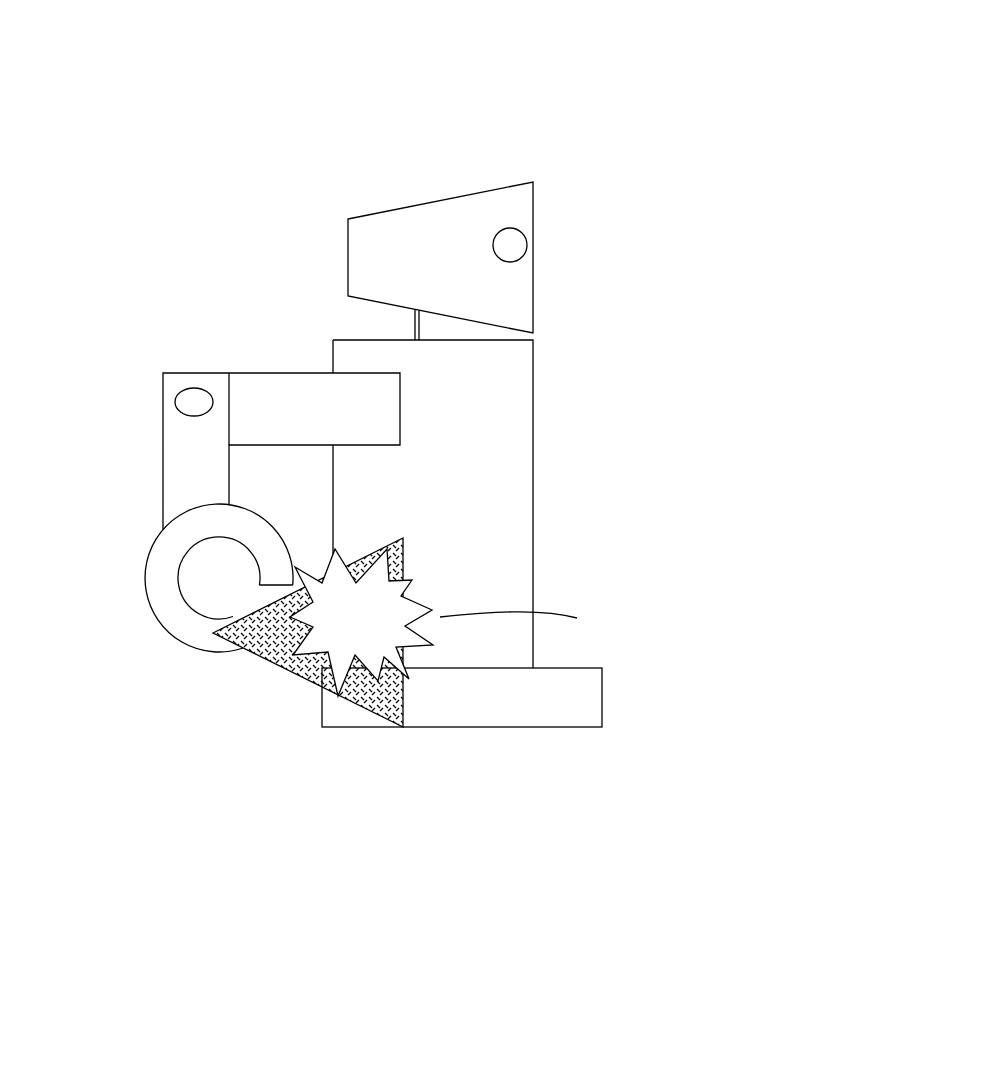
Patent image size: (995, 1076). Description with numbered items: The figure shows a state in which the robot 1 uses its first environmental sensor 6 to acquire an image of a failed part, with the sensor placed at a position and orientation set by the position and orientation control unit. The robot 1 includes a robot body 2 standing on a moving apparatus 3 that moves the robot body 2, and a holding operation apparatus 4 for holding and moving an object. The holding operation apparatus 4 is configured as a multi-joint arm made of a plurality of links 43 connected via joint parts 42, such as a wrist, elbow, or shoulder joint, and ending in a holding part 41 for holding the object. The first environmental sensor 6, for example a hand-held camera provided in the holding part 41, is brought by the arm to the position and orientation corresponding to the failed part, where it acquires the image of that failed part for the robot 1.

The robot 1 is at (578, 92).
The robot body 2 is at (528, 485).
The moving apparatus 3 is at (602, 698).
The holding operation apparatus 4 is at (249, 389).
The first environmental sensor 6 is at (225, 640).
The holding part 41 is at (170, 624).
The joint parts 42 is at (194, 398).
The links 43 is at (285, 390).